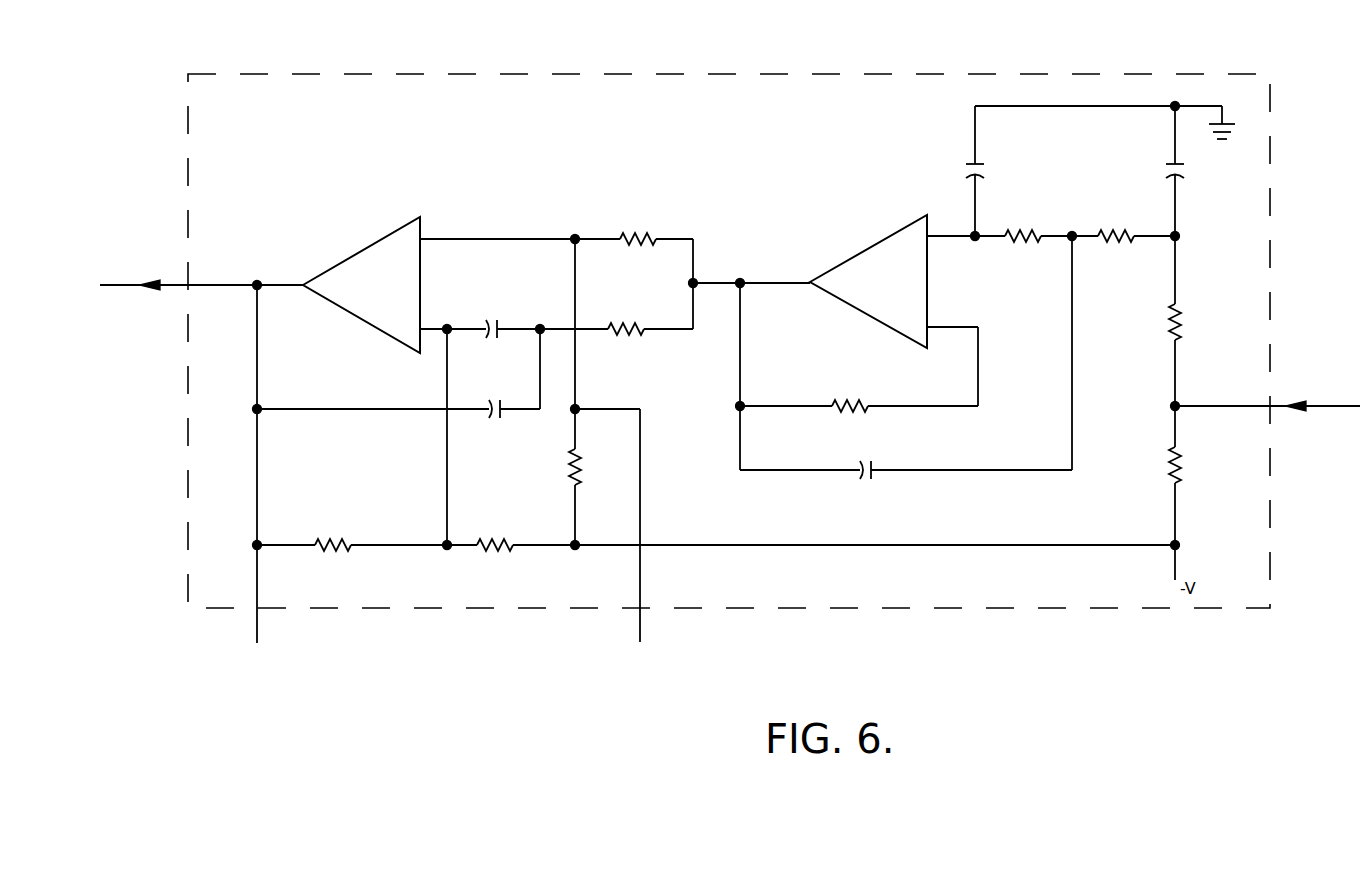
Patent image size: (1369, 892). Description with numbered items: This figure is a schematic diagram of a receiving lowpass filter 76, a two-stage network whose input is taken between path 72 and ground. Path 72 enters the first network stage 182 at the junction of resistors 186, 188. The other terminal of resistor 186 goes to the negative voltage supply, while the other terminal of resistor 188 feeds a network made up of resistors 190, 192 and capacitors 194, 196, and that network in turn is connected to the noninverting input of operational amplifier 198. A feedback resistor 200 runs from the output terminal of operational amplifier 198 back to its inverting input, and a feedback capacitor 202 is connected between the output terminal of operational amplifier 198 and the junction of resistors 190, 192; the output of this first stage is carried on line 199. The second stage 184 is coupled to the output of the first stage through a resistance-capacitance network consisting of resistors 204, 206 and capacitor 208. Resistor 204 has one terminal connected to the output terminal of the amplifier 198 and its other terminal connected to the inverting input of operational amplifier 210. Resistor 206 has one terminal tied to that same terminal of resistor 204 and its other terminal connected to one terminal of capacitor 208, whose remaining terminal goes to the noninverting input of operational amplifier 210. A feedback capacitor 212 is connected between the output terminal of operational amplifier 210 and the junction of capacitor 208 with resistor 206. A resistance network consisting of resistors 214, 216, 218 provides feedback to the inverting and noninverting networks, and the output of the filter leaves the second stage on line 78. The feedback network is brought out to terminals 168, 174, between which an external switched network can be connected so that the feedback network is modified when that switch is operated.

The receiving lowpass filter 76 is at (250, 120).
The output line 78 is at (118, 285).
The path 72 is at (1318, 404).
The terminal 168 is at (262, 632).
The terminal 174 is at (645, 632).
The first network stage 182 is at (810, 212).
The second stage 184 is at (476, 184).
The resistor 186 is at (1180, 466).
The resistor 188 is at (1180, 331).
The resistor 190 is at (1122, 232).
The resistor 192 is at (1030, 232).
The capacitor 194 is at (1184, 168).
The capacitor 196 is at (984, 172).
The operational amplifier 198 is at (909, 227).
The output line of amplifier 199 is at (760, 282).
The feedback resistor 200 is at (852, 407).
The feedback capacitor 202 is at (872, 472).
The resistor 204 is at (652, 237).
The resistor 206 is at (638, 333).
The capacitor 208 is at (498, 324).
The operational amplifier 210 is at (402, 228).
The feedback capacitor 212 is at (494, 418).
The resistor 214 is at (338, 543).
The resistor 216 is at (498, 543).
The resistor 218 is at (585, 470).